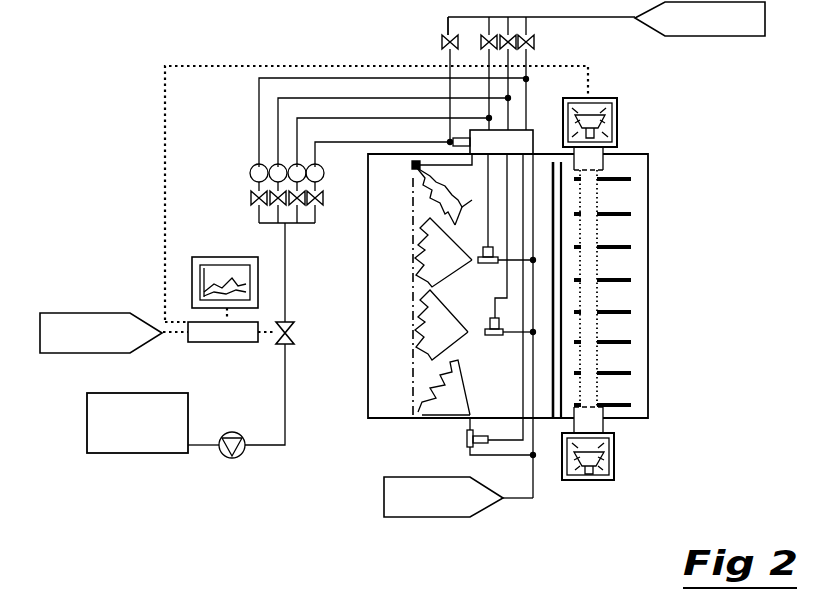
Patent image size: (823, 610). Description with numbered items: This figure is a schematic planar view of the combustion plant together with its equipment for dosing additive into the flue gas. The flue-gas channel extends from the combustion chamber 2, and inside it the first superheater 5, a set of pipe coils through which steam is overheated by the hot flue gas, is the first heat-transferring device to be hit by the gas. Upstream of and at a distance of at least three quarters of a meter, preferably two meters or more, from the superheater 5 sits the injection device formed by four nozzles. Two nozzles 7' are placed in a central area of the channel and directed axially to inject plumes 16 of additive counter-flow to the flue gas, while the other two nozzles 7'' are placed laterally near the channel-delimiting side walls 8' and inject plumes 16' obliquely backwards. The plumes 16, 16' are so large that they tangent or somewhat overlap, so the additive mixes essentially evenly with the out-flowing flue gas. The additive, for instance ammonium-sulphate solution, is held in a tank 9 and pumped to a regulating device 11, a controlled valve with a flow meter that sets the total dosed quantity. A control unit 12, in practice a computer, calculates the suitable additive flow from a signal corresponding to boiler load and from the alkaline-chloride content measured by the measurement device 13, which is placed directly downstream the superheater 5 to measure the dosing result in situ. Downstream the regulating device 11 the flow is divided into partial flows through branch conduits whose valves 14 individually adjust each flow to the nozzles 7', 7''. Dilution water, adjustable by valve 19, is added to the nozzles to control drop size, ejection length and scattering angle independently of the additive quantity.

The combustion chamber 2 is at (372, 388).
The superheater 5 is at (562, 266).
The nozzle 7' is at (497, 267).
The nozzle 7'' is at (472, 304).
The channel-delimiting side wall 8' is at (394, 288).
The tank 9 is at (132, 455).
The regulating device 11 is at (291, 318).
The control unit 12 is at (221, 346).
The measurement device 13 is at (618, 122).
The valves 14 is at (250, 197).
The plume of additive 16 is at (443, 289).
The plume of additive 16' is at (423, 318).
The valve 19 is at (443, 43).